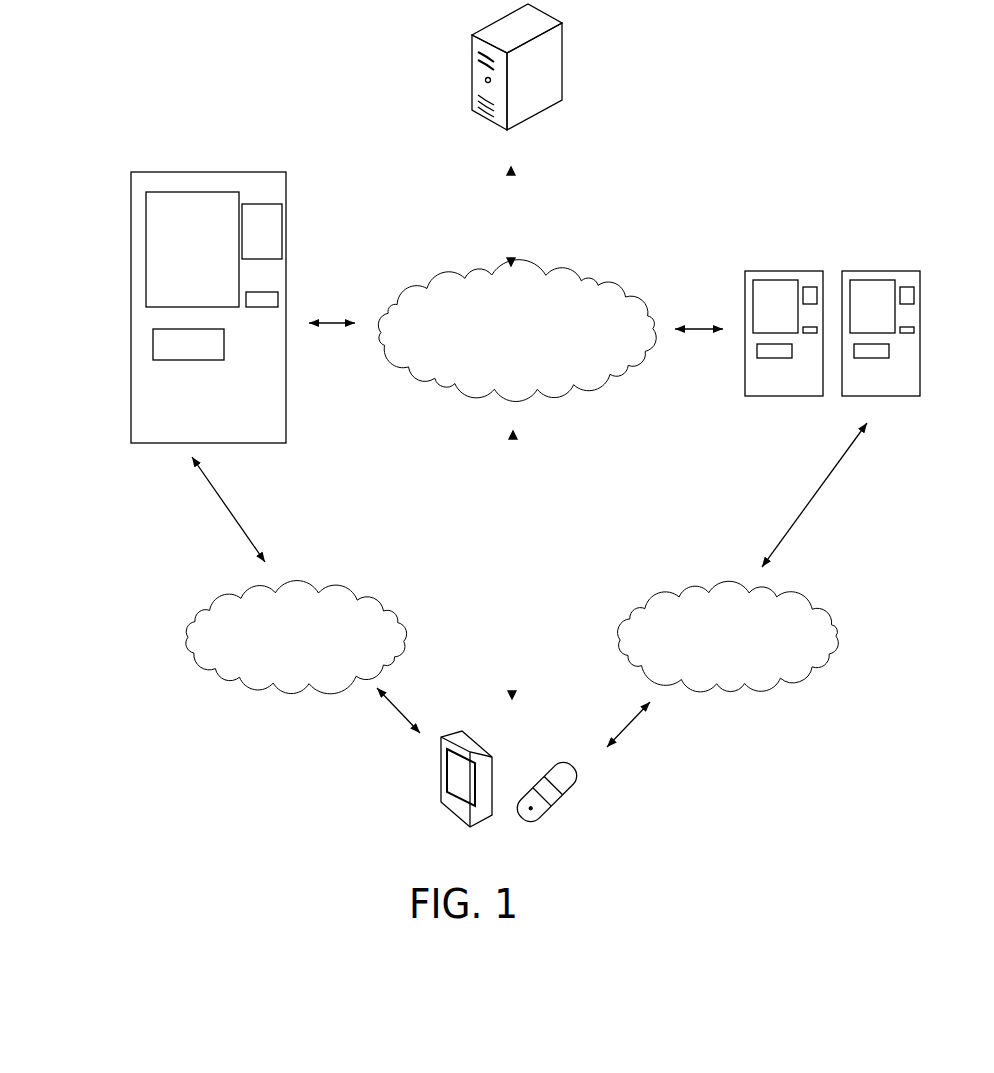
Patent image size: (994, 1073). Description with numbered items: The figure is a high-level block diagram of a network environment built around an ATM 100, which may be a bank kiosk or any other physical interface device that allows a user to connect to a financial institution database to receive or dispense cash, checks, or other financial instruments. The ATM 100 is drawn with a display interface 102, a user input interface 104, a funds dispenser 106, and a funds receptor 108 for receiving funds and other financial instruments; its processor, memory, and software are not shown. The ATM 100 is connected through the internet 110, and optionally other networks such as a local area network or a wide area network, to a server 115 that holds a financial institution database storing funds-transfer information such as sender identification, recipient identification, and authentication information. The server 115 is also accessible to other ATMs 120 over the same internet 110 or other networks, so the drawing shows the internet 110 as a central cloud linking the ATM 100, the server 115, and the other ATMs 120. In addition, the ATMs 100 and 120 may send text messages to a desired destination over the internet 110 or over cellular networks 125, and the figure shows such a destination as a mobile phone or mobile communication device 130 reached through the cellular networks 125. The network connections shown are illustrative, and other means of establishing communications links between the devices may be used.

The ATM 100 is at (131, 206).
The display interface 102 is at (146, 268).
The user input interface 104 is at (282, 215).
The funds dispenser 106 is at (153, 347).
The funds receptor 108 is at (278, 292).
The internet 110 is at (536, 353).
The server 115 is at (560, 30).
The other ATMs 120 is at (838, 252).
The cellular networks 125 is at (280, 672).
The mobile phone or mobile communication device 130 is at (575, 805).